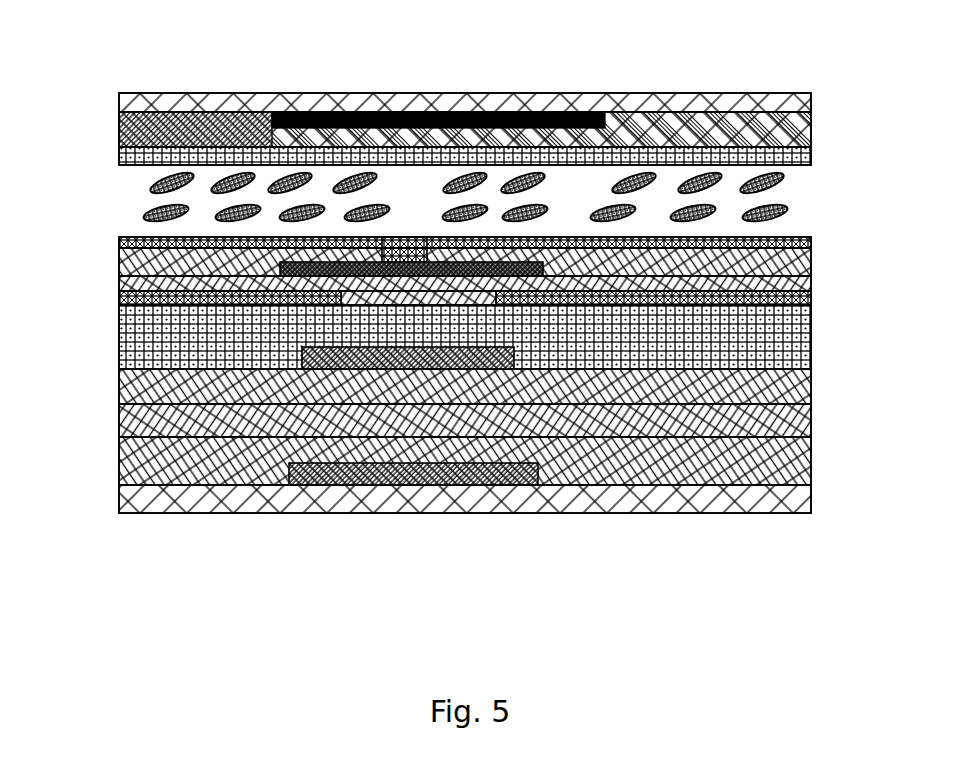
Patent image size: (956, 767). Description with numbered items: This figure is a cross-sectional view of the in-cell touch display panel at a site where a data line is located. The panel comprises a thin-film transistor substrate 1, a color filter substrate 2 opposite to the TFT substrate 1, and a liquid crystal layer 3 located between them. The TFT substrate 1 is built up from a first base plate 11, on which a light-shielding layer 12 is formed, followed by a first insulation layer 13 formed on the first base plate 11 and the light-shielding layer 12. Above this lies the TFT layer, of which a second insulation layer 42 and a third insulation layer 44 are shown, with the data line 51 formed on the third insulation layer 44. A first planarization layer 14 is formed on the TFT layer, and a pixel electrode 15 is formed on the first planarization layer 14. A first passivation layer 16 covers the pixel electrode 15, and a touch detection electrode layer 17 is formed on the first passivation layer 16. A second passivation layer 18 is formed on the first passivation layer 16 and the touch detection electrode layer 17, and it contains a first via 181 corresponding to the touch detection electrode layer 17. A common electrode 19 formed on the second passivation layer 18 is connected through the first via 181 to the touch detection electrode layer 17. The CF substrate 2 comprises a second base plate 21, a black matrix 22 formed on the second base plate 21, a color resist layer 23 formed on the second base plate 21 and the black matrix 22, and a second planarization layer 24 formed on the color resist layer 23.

The thin-film transistor substrate 1 is at (455, 408).
The color filter substrate 2 is at (432, 93).
The liquid crystal layer 3 is at (147, 213).
The first base plate 11 is at (461, 531).
The light-shielding layer 12 is at (303, 477).
The first insulation layer 13 is at (193, 470).
The first planarization layer 14 is at (677, 347).
The pixel electrode 15 is at (243, 301).
The first passivation layer 16 is at (423, 288).
The touch detection electrode layer 17 is at (487, 272).
The second passivation layer 18 is at (728, 263).
The first via 181 is at (383, 262).
The common electrode 19 is at (810, 297).
The second base plate 21 is at (764, 104).
The black matrix 22 is at (323, 111).
The color resist layer 23 is at (690, 128).
The second planarization layer 24 is at (628, 157).
The second insulation layer 42 is at (567, 425).
The third insulation layer 44 is at (605, 385).
The data line 51 is at (327, 358).